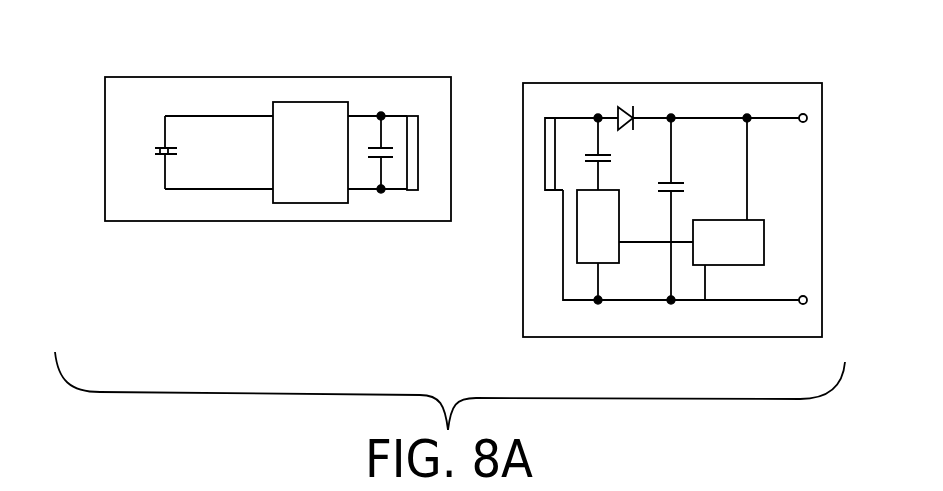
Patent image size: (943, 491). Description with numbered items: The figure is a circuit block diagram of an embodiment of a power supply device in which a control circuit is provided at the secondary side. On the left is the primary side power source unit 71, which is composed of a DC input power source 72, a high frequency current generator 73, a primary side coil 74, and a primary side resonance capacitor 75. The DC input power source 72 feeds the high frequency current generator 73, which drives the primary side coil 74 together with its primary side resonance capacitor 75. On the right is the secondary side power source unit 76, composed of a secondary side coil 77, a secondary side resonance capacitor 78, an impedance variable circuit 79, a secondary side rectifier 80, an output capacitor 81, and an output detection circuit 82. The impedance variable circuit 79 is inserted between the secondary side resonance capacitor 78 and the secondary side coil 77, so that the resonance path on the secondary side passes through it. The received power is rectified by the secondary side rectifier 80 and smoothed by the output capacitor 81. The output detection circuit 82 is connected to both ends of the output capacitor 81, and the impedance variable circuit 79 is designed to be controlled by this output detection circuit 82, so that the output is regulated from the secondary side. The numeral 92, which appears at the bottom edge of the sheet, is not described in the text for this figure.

The primary side power source unit 71 is at (105, 132).
The DC input power source 72 is at (157, 162).
The high frequency current generator 73 is at (297, 203).
The primary side coil 74 is at (416, 195).
The primary side resonance capacitor 75 is at (373, 160).
The secondary side power source unit 76 is at (523, 305).
The secondary side coil 77 is at (549, 116).
The secondary side resonance capacitor 78 is at (590, 147).
The impedance variable circuit 79 is at (582, 262).
The secondary side rectifier 80 is at (628, 110).
The output capacitor 81 is at (680, 177).
The output detection circuit 82 is at (782, 240).
The reference numeral of adjacent figure 92 is at (655, 485).